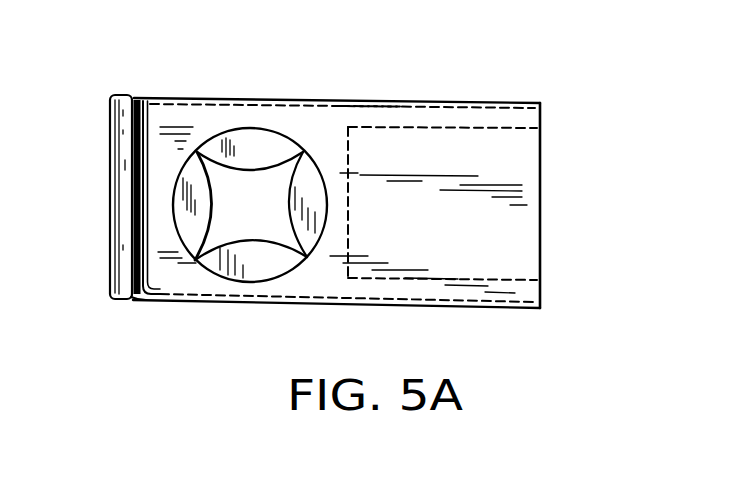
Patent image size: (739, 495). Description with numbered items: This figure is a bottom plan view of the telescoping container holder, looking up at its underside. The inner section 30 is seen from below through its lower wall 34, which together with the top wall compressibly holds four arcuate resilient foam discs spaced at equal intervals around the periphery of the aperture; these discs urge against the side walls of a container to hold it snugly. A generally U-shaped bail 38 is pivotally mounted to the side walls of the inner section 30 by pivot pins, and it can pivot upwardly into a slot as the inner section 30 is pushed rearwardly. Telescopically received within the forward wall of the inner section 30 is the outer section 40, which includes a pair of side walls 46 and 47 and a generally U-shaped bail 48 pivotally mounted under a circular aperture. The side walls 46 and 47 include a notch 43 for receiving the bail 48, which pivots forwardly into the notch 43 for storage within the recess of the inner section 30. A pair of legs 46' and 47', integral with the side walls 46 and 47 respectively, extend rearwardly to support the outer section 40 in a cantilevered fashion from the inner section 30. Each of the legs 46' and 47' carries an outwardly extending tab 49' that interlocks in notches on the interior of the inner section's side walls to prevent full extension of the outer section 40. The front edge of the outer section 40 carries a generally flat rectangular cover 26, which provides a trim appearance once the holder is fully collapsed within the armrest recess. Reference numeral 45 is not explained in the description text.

The rectangular cover 26 is at (110, 263).
The inner section 30 is at (314, 277).
The lower wall 34 is at (327, 108).
The bail 38 is at (147, 100).
The outer section 40 is at (324, 100).
The notch 43 is at (133, 297).
The circular window 45 is at (258, 160).
The side wall 46 is at (336, 320).
The leg 46' is at (442, 313).
The side wall 47 is at (370, 84).
The leg 47' is at (442, 170).
The bail 48 is at (153, 115).
The tab 49' is at (561, 209).